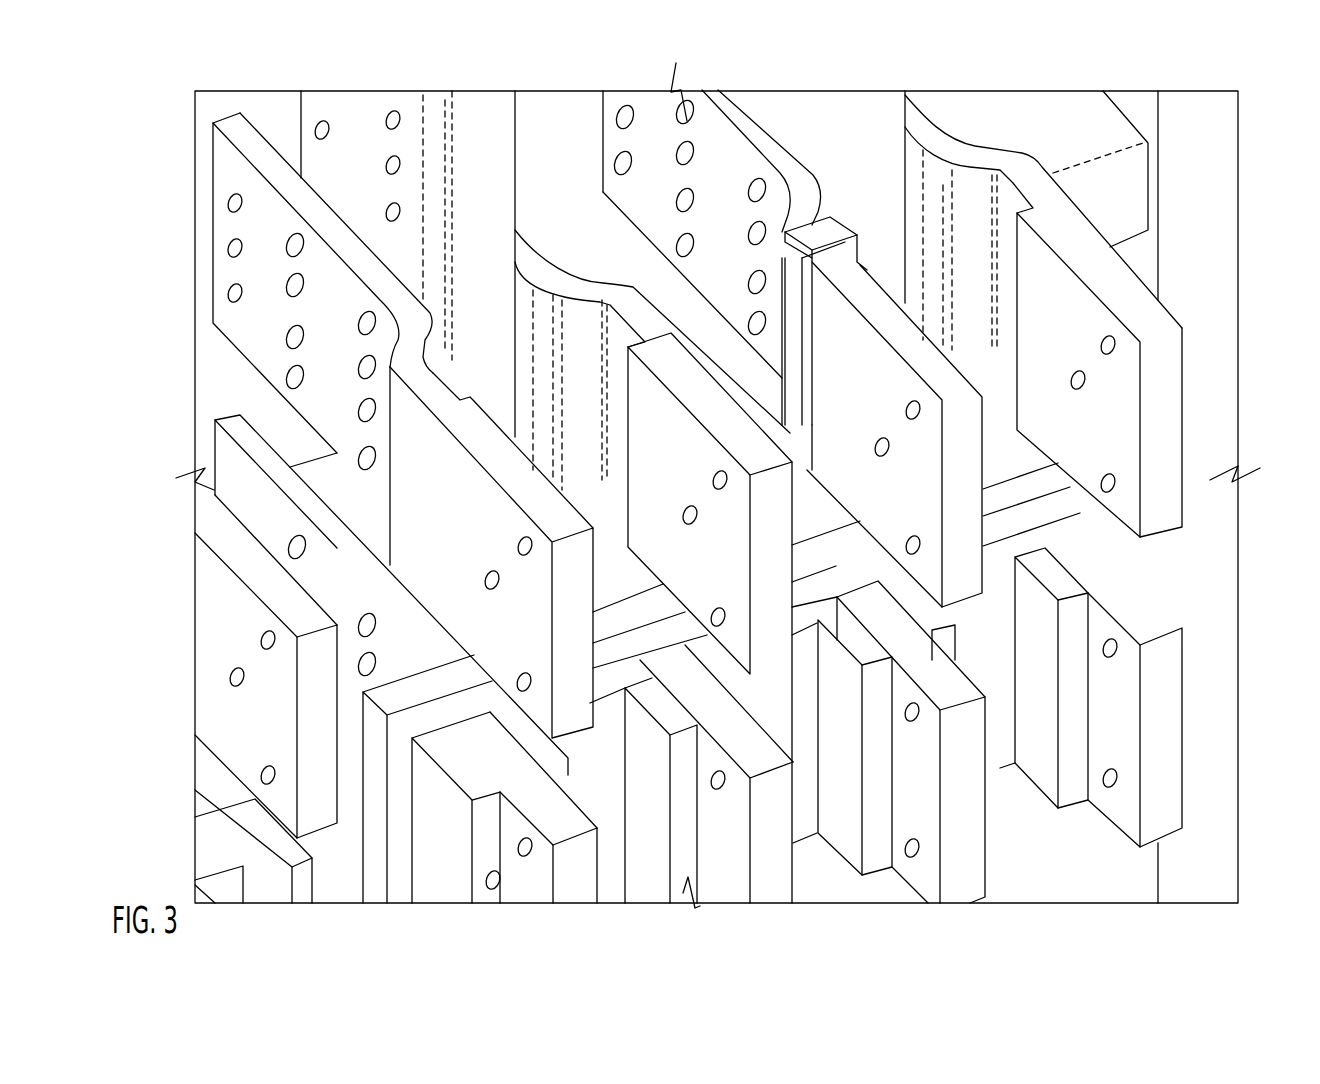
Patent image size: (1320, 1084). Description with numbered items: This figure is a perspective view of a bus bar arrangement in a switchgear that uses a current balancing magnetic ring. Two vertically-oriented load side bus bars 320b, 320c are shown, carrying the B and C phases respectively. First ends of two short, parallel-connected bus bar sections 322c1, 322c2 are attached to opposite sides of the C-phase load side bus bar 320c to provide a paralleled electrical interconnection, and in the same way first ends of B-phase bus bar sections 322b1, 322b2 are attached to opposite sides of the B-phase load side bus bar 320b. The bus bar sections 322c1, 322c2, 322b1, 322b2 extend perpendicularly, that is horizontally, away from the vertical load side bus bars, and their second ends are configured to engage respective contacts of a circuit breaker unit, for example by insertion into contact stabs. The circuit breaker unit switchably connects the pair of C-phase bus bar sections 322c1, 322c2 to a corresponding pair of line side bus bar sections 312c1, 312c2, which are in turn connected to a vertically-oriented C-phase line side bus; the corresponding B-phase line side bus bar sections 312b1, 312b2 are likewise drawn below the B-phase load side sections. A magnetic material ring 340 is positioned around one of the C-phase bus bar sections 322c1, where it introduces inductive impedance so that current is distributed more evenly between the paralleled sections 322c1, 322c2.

The load side bus bar 320b is at (497, 133).
The load side bus bar 320c is at (893, 190).
The magnetic material ring 340 is at (795, 252).
The bus bar section 322b1 is at (580, 548).
The bus bar section 322b2 is at (763, 515).
The bus bar section 322c1 is at (970, 470).
The bus bar section 322c2 is at (1170, 353).
The line side bus bar section 312b1 is at (568, 875).
The line side bus bar section 312b2 is at (765, 857).
The line side bus bar section 312c1 is at (963, 780).
The line side bus bar section 312c2 is at (1167, 670).